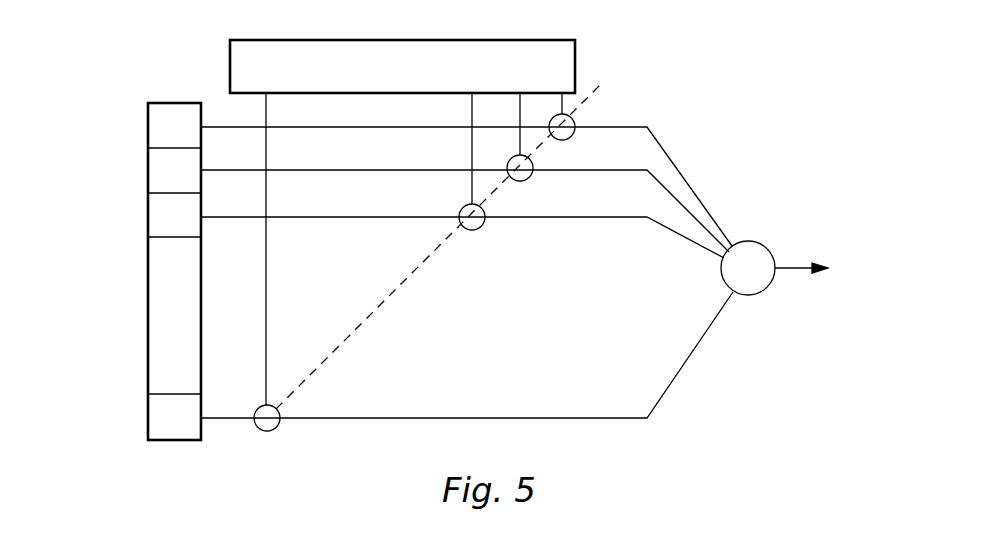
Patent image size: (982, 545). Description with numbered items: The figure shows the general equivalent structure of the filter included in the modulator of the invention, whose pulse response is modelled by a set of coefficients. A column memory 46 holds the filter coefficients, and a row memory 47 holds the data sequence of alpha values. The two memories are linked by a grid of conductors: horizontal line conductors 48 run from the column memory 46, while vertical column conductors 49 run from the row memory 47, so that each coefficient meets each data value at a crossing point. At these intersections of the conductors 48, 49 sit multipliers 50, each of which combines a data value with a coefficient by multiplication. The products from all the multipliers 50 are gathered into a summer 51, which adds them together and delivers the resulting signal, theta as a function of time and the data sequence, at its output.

The column memory 46 is at (156, 418).
The row memory 47 is at (575, 67).
The line conductors 48 is at (407, 127).
The column conductors 49 is at (266, 305).
The multipliers 50 is at (570, 137).
The summer 51 is at (756, 248).